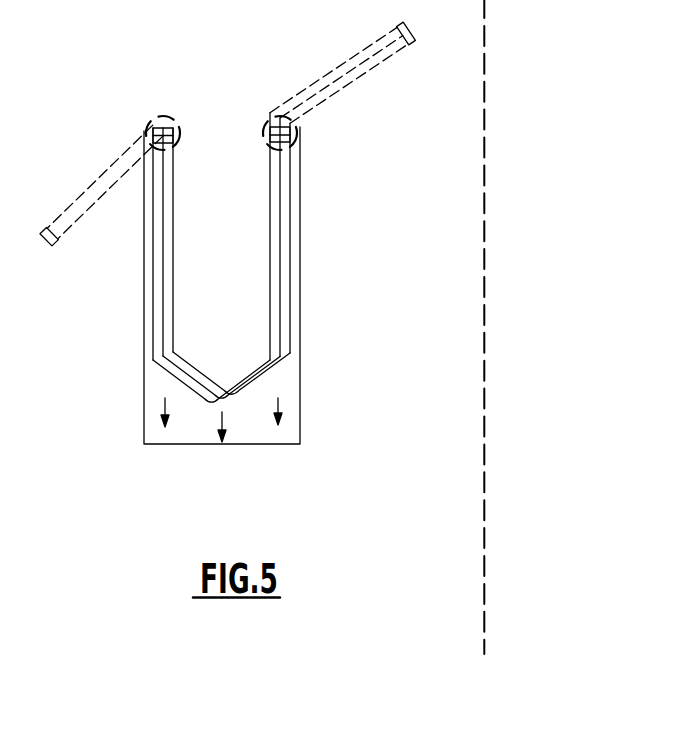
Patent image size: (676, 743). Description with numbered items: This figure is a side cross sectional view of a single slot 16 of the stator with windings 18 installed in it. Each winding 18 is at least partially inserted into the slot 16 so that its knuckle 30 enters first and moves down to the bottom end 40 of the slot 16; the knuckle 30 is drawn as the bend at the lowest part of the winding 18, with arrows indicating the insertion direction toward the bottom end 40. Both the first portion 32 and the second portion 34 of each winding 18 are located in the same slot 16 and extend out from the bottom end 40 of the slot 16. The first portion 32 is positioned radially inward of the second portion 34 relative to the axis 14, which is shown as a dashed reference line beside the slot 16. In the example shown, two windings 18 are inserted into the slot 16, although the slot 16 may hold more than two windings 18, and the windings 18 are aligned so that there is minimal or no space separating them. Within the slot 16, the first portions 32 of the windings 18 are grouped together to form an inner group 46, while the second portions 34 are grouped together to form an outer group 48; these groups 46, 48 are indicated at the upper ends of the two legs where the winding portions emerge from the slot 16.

The axis 14 is at (483, 265).
The slot 16 is at (300, 410).
The winding 18 is at (262, 365).
The knuckle 30 is at (236, 404).
The first portion 32 is at (278, 200).
The second portion 34 is at (167, 256).
The bottom end 40 is at (193, 446).
The inner group 46 is at (268, 136).
The outer group 48 is at (177, 119).